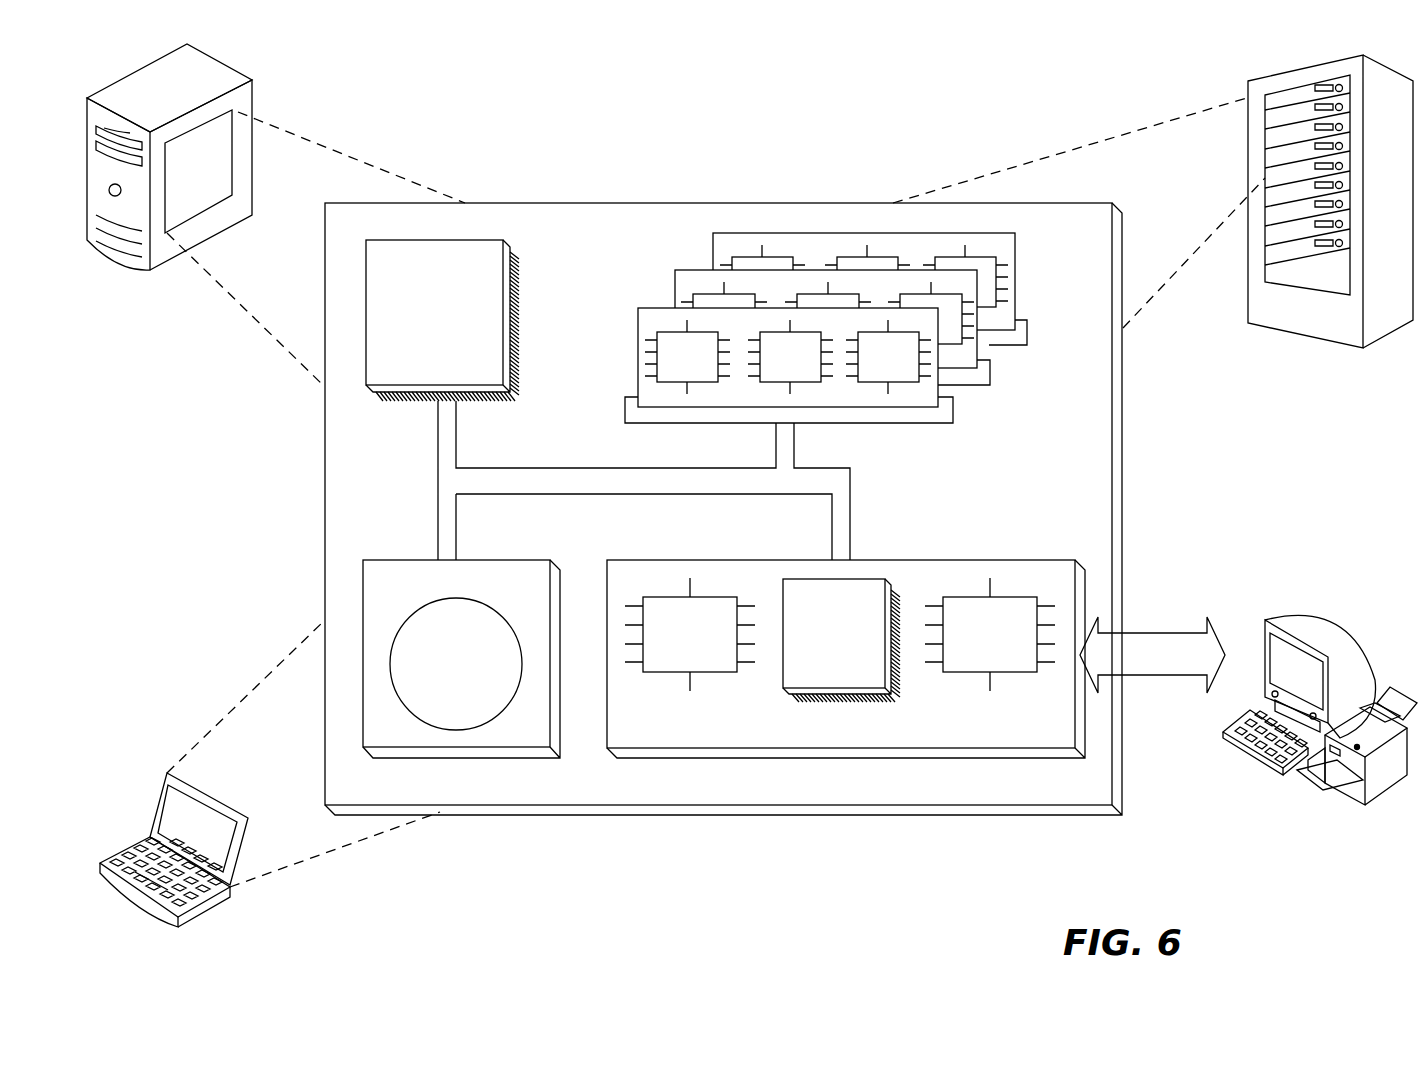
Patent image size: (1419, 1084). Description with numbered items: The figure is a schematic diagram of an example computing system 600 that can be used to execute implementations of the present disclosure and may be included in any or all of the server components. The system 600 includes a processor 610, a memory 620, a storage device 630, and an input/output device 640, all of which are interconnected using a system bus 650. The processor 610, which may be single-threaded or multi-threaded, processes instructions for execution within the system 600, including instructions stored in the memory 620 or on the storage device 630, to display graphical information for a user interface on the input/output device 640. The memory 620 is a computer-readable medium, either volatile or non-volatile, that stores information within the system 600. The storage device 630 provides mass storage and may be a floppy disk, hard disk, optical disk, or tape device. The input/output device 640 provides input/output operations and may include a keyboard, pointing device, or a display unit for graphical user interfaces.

The computing system 600 is at (536, 120).
The processor 610 is at (442, 320).
The memory 620 is at (1019, 383).
The storage device 630 is at (461, 659).
The input/output device 640 is at (1263, 622).
The system bus 650 is at (638, 485).